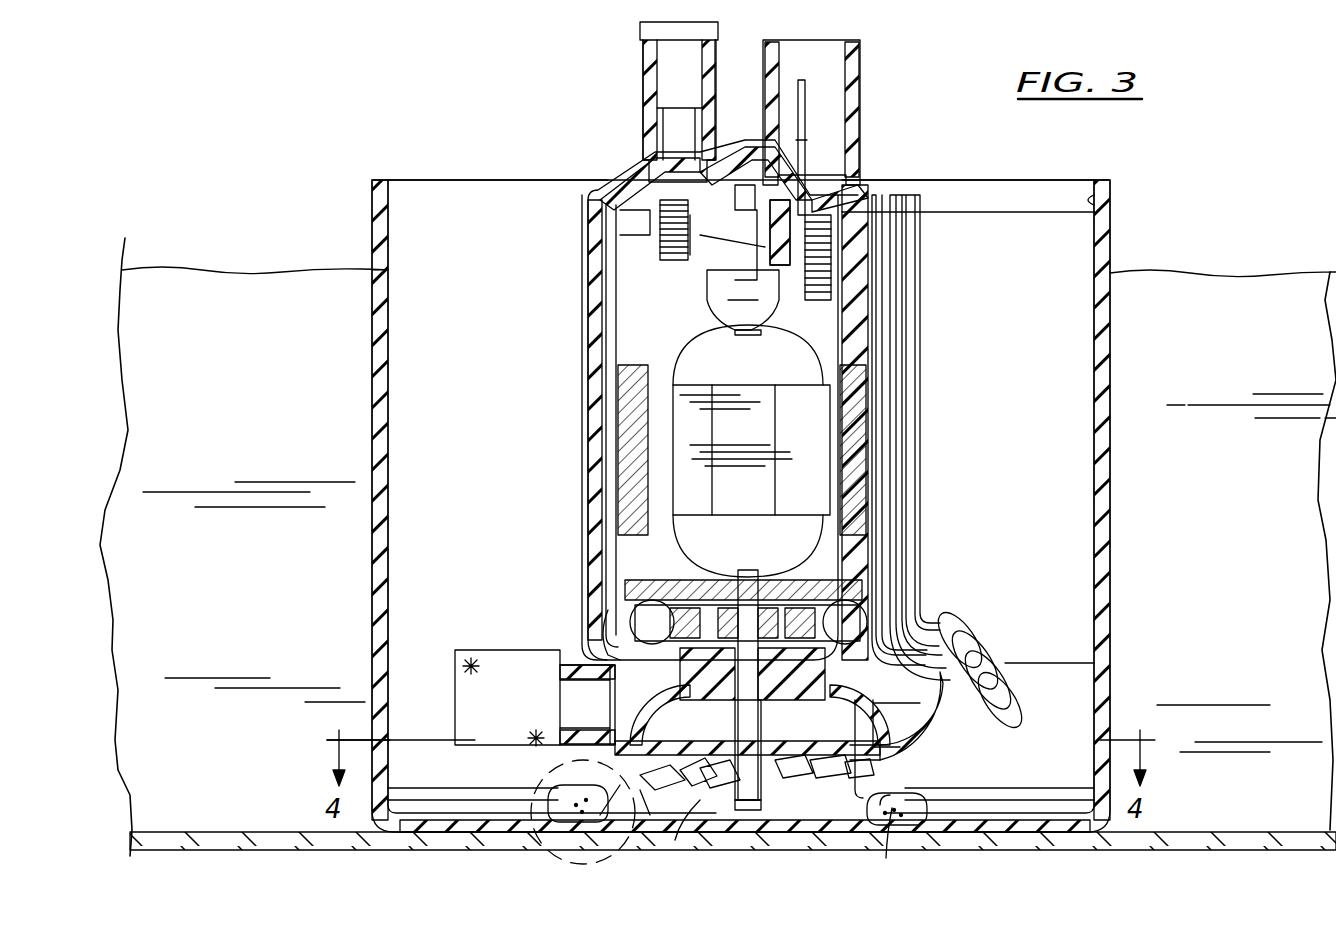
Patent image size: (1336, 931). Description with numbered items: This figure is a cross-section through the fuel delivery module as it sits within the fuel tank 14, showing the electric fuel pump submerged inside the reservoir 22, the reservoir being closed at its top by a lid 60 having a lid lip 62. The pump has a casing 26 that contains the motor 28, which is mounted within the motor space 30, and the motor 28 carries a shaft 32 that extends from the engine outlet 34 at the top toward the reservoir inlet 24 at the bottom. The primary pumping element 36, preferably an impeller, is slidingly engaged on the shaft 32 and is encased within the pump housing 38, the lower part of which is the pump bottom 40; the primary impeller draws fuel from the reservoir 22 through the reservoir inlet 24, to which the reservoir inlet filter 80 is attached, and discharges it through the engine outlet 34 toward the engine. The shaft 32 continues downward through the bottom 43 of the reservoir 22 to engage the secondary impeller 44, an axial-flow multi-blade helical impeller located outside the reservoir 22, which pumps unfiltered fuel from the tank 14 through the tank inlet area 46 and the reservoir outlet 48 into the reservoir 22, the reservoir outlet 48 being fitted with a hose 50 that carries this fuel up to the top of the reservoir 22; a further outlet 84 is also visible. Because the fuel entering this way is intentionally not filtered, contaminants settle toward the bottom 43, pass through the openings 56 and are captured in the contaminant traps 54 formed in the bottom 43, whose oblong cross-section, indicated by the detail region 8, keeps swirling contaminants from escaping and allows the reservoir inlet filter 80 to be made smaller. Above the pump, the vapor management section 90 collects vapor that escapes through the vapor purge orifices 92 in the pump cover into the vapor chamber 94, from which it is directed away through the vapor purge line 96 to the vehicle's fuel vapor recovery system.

The detail region 8 is at (598, 862).
The fuel tank 14 is at (1045, 850).
The reservoir 22 is at (1108, 322).
The reservoir inlet 24 is at (580, 730).
The casing 26 is at (610, 240).
The motor 28 is at (668, 413).
The motor space 30 is at (635, 312).
The shaft 32 is at (743, 593).
The engine outlet 34 is at (668, 125).
The primary pumping element 36 is at (633, 612).
The pump housing 38 is at (620, 645).
The pump bottom 40 is at (778, 580).
The bottom 43 is at (490, 835).
The secondary impeller 44 is at (790, 830).
The tank inlet area 46 is at (694, 830).
The reservoir outlet 48 is at (938, 640).
The hose 50 is at (965, 655).
The contaminant traps 54 is at (886, 858).
The openings 56 is at (875, 792).
The lid 60 is at (1030, 225).
The lid lip 62 is at (1106, 200).
The reservoir inlet filter 80 is at (460, 680).
The outlet 84 is at (705, 835).
The vapor management section 90 is at (934, 475).
The vapor purge orifices 92 is at (810, 740).
The vapor chamber 94 is at (724, 740).
The vapor purge line 96 is at (915, 283).